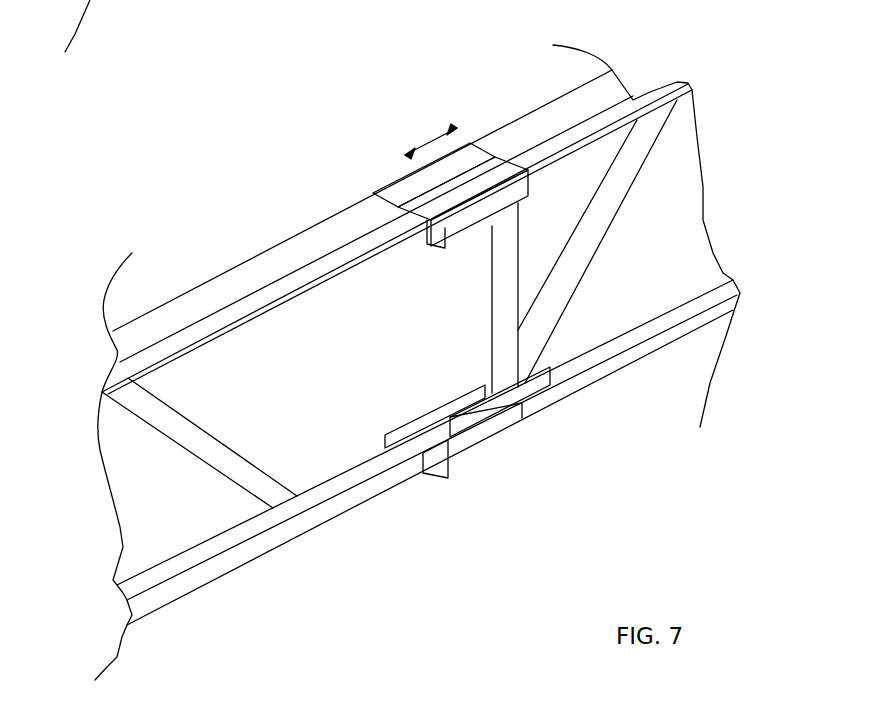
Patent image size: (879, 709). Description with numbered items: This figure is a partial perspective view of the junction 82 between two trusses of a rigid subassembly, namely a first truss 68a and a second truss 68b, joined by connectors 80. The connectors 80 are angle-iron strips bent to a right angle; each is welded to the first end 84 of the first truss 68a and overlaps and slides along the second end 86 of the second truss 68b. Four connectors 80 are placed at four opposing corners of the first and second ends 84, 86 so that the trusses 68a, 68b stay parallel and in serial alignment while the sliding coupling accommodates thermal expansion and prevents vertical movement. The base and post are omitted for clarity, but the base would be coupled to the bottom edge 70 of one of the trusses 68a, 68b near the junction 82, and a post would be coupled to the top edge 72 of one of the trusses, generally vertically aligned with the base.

The first truss 68a is at (573, 378).
The second truss 68b is at (208, 573).
The bottom edge 70 is at (127, 612).
The top edge 72 is at (680, 78).
The connectors 80 is at (400, 188).
The junction 82 is at (513, 448).
The first end 84 is at (523, 127).
The second end 86 is at (312, 228).